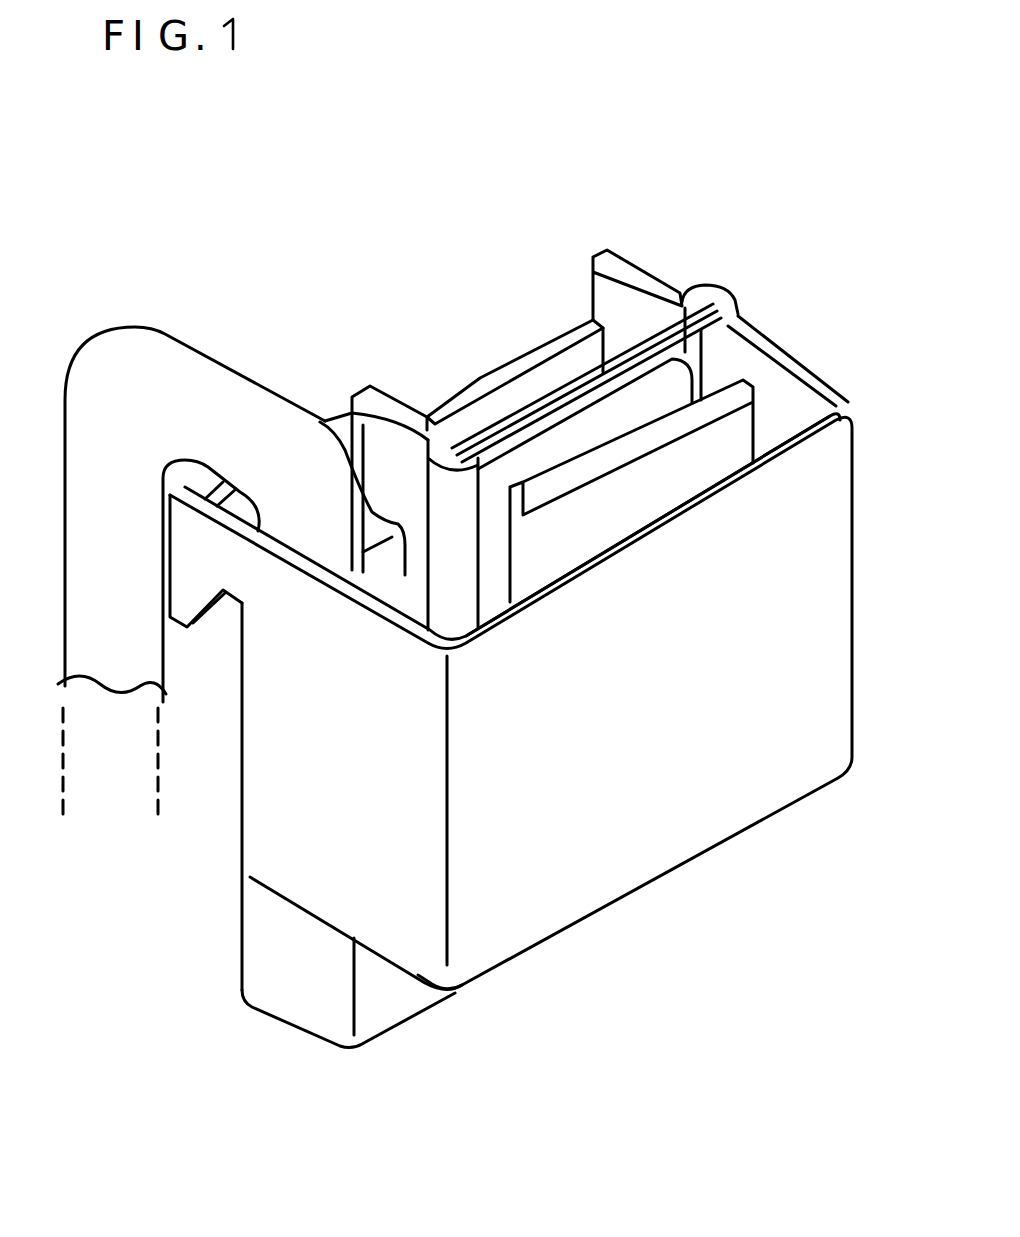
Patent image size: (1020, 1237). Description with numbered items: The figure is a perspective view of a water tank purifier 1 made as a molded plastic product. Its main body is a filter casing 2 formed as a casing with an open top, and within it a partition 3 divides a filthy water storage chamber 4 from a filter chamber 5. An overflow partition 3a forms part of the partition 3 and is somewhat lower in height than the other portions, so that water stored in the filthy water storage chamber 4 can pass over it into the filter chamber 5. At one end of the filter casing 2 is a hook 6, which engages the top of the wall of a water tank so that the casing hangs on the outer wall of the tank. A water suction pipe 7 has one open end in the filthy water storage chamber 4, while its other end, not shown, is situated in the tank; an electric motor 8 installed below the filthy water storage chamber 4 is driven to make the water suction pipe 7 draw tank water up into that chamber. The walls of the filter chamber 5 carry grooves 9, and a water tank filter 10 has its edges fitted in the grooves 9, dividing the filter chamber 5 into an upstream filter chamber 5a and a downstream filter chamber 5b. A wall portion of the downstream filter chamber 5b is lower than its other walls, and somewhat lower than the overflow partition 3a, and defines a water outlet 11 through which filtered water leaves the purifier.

The water tank purifier 1 is at (452, 318).
The filter casing 2 is at (638, 868).
The partition 3 is at (395, 447).
The overflow partition 3a is at (708, 458).
The filthy water storage chamber 4 is at (552, 556).
The filter chamber 5 is at (720, 376).
The upstream filter chamber 5a is at (612, 425).
The downstream filter chamber 5b is at (565, 372).
The hook 6 is at (192, 590).
The water suction pipe 7 is at (144, 354).
The electric motor 8 is at (262, 936).
The grooves 9 is at (455, 447).
The water tank filter 10 is at (682, 312).
The water outlet 11 is at (510, 365).